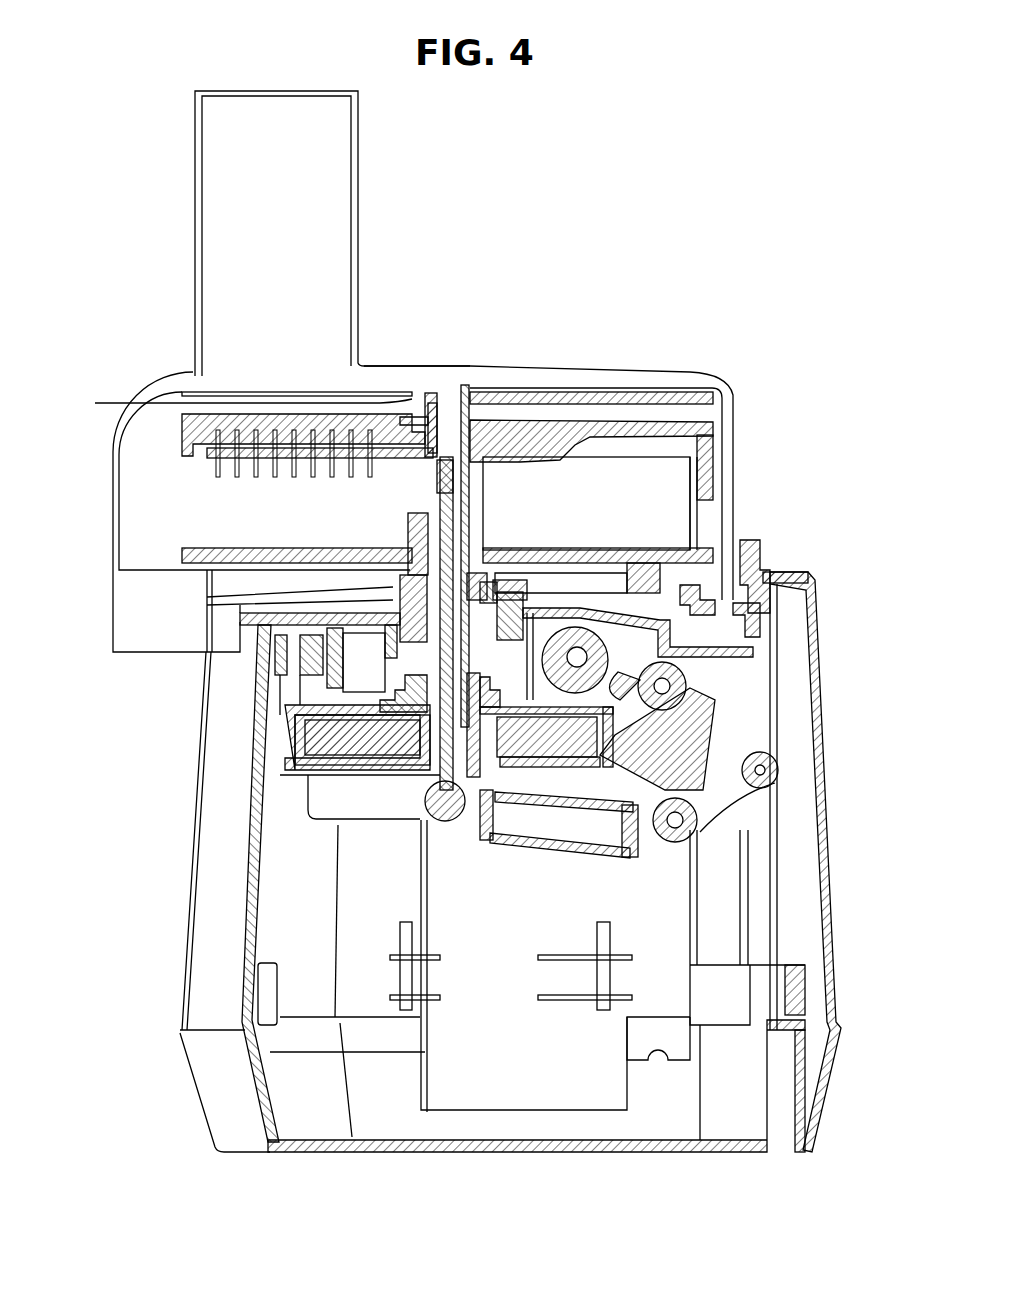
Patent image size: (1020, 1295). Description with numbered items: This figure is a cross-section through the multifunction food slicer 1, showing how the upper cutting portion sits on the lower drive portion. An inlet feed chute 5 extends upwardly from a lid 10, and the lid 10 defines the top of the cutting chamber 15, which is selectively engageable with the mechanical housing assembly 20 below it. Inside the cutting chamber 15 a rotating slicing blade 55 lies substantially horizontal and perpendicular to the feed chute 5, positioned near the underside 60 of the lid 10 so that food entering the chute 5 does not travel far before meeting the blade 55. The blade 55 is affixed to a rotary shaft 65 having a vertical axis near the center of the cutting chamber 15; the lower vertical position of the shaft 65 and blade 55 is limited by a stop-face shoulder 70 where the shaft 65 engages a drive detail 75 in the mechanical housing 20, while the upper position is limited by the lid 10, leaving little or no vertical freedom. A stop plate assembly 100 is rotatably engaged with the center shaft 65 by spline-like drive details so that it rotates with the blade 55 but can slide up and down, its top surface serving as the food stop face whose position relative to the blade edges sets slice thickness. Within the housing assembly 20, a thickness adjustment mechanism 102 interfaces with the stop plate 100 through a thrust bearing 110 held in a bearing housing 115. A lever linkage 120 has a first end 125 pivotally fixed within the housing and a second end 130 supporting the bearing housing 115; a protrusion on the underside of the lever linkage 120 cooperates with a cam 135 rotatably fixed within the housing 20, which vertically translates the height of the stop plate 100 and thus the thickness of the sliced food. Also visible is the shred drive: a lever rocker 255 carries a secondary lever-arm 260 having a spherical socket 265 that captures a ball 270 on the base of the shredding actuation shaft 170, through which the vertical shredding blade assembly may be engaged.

The food slicer 1 is at (752, 318).
The inlet feed chute 5 is at (308, 110).
The lid 10 is at (583, 347).
The cutting chamber 15 is at (758, 428).
The mechanical housing assembly 20 is at (175, 1000).
The slicing blade 55 is at (250, 383).
The underside of the lid 60 is at (238, 400).
The rotary shaft 65 is at (440, 435).
The stop-face shoulder 70 is at (415, 728).
The drive detail 75 is at (413, 825).
The stop plate assembly 100 is at (170, 432).
The thickness adjustment mechanism 102 is at (633, 660).
The thrust bearing 110 is at (495, 590).
The bearing housing 115 is at (765, 565).
The lever linkage 120 is at (702, 640).
The first end 125 is at (740, 625).
The second end 130 is at (700, 775).
The cam 135 is at (615, 705).
The shredding actuation shaft 170 is at (443, 727).
The lever rocker 255 is at (583, 848).
The secondary lever-arm 260 is at (520, 963).
The spherical socket 265 is at (453, 802).
The ball 270 is at (460, 828).